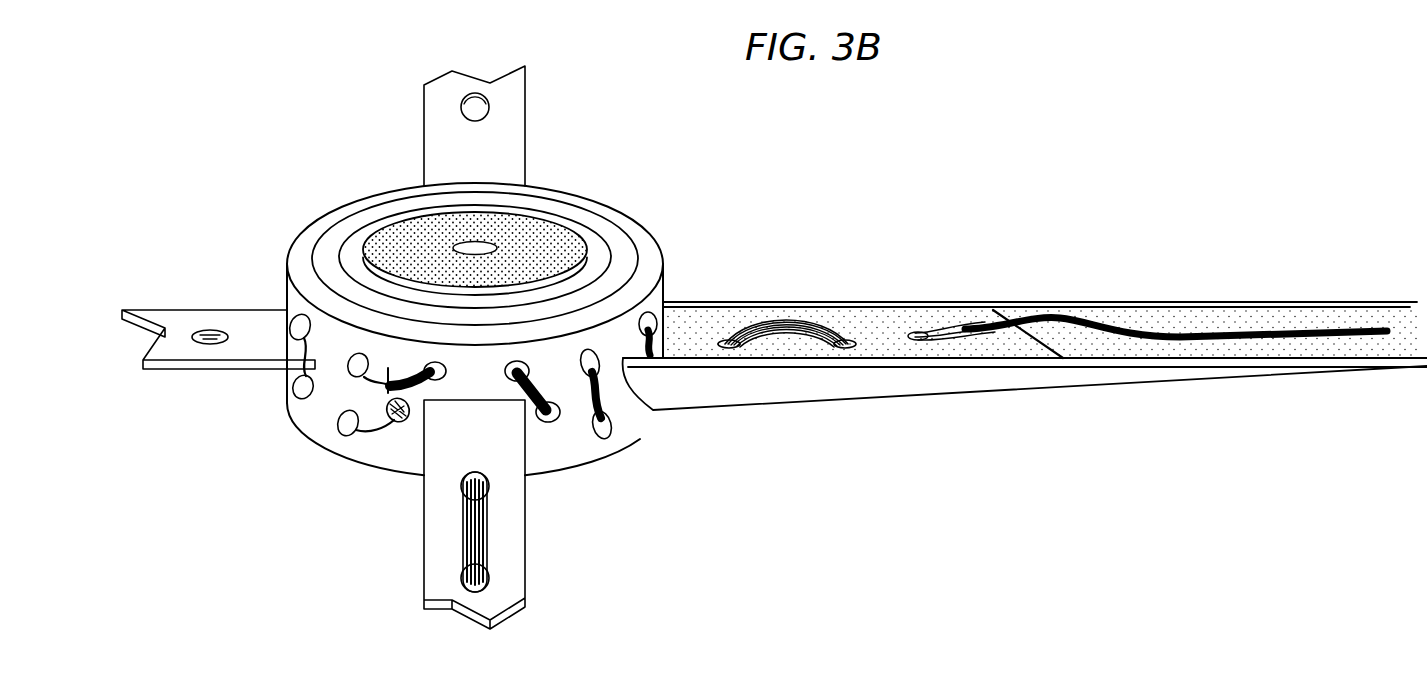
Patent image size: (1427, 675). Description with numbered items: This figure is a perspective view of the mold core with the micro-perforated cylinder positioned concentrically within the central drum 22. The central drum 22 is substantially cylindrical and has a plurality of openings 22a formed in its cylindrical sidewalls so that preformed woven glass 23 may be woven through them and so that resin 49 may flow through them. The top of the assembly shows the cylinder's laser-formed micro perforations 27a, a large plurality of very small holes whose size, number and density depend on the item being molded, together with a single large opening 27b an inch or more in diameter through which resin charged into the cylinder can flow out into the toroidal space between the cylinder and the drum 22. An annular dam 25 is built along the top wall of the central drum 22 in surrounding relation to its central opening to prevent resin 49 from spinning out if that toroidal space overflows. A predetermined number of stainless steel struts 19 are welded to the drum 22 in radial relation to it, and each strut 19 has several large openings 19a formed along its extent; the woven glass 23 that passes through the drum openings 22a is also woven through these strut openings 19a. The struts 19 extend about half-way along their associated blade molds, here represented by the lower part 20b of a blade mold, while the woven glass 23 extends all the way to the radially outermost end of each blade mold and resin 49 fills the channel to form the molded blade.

The stainless steel strut 19 is at (527, 91).
The strut opening 19a is at (465, 99).
The lower part of blade mold 20b is at (842, 385).
The central drum 22 is at (668, 240).
The drum opening 22a is at (345, 428).
The preformed woven glass 23 is at (610, 402).
The annular dam 25 is at (328, 228).
The micro perforations 27a is at (380, 230).
The large opening 27b is at (470, 252).
The resin 49 is at (885, 320).